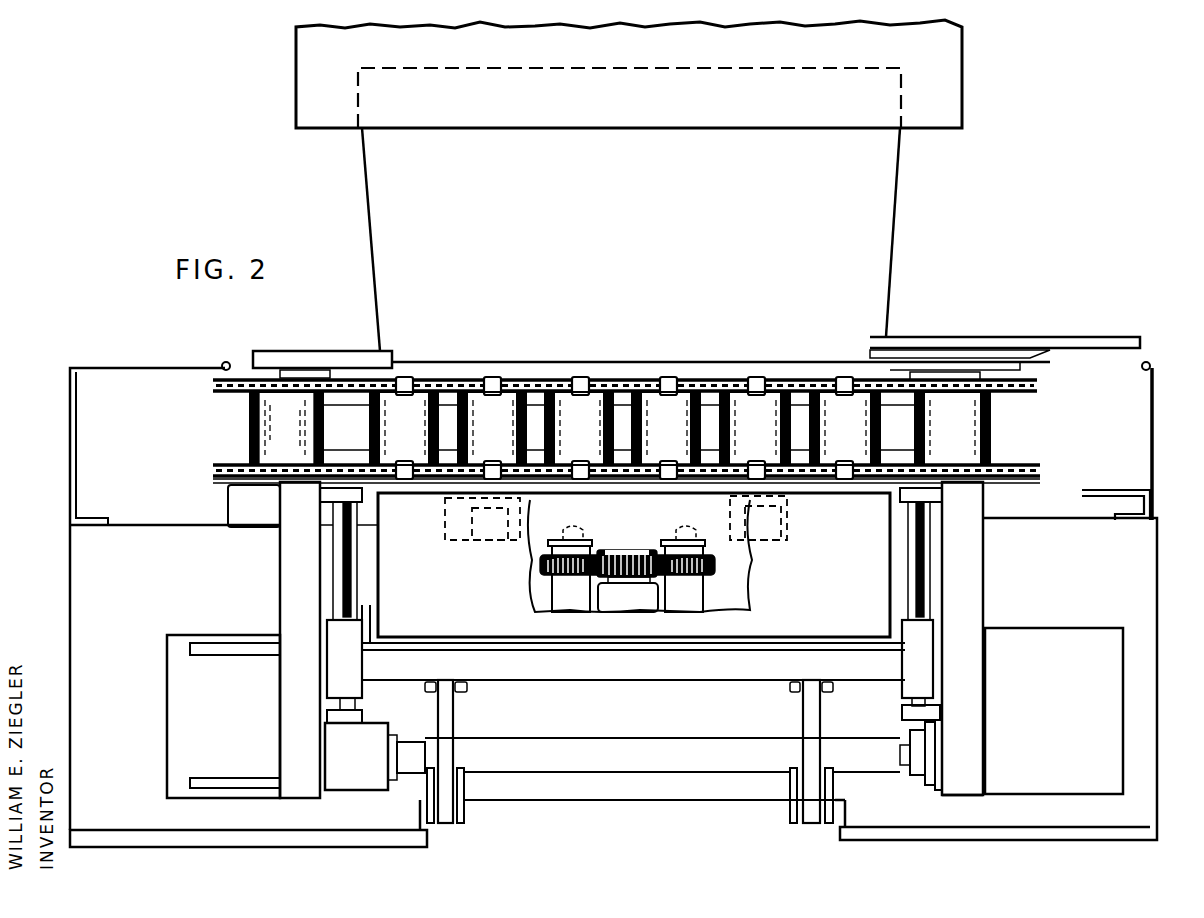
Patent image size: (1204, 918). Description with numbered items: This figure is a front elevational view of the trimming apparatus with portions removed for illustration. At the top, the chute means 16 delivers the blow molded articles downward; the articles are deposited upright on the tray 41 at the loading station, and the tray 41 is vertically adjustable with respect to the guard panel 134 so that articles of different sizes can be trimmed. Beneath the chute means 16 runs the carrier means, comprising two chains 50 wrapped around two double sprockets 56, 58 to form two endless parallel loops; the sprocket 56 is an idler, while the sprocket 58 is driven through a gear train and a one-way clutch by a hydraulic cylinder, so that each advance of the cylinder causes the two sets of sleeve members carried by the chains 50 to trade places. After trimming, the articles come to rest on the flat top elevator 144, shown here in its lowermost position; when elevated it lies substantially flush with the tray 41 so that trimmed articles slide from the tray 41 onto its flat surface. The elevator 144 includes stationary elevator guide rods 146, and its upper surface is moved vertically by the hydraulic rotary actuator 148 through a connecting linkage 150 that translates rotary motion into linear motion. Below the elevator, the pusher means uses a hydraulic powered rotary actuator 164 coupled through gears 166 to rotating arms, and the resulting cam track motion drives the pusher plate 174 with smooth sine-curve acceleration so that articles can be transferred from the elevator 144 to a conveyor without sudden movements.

The chute means 16 is at (898, 229).
The tray 41 is at (1108, 492).
The chains 50 is at (1040, 383).
The sprocket 56 is at (250, 432).
The sprocket 58 is at (1000, 430).
The guard panel 134 is at (1153, 452).
The elevator 144 is at (765, 640).
The elevator guide rods 146 is at (345, 567).
The rotary actuator 148 is at (1064, 723).
The connecting linkage 150 is at (445, 740).
The rotary actuator 164 is at (640, 600).
The gears 166 is at (540, 566).
The pusher plate 174 is at (462, 603).